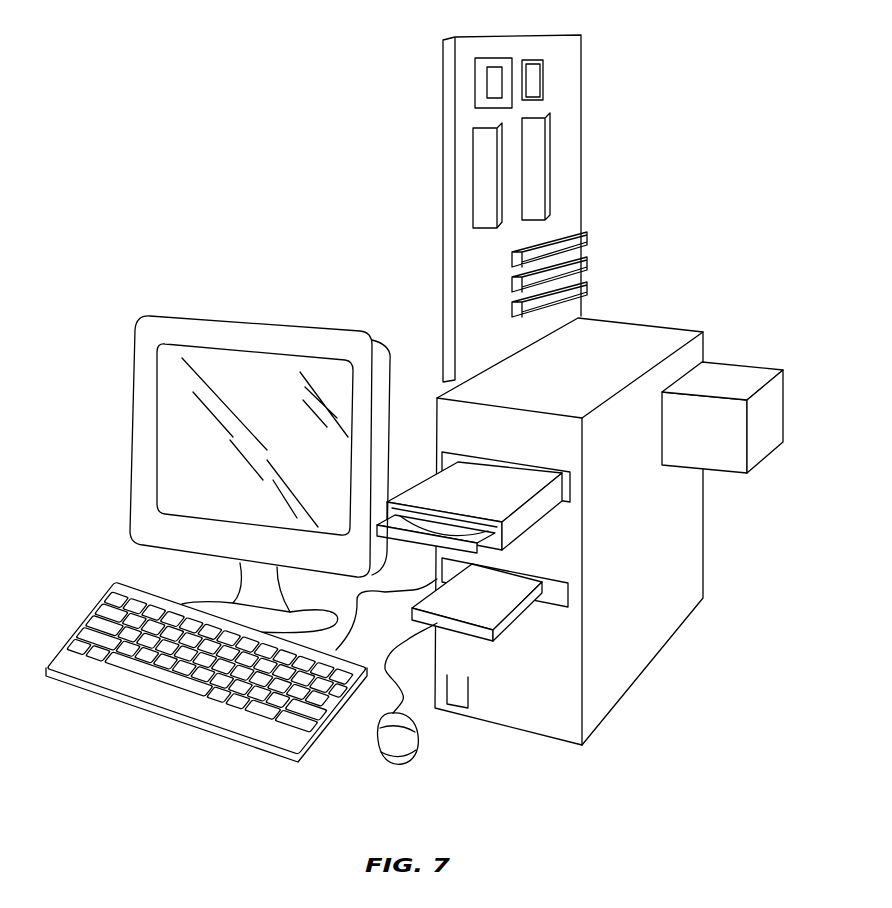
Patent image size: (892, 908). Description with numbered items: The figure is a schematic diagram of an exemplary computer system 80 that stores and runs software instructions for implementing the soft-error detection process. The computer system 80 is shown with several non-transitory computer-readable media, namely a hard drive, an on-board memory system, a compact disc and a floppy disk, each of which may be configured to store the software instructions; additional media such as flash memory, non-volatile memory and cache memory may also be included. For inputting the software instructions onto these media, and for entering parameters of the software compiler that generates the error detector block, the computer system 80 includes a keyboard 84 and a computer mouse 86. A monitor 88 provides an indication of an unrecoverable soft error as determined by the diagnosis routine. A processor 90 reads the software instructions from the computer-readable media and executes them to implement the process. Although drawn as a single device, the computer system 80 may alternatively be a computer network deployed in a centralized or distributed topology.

The computer system 80 is at (208, 160).
The keyboard 84 is at (120, 582).
The computer mouse 86 is at (402, 743).
The monitor 88 is at (135, 370).
The processor 90 is at (485, 80).